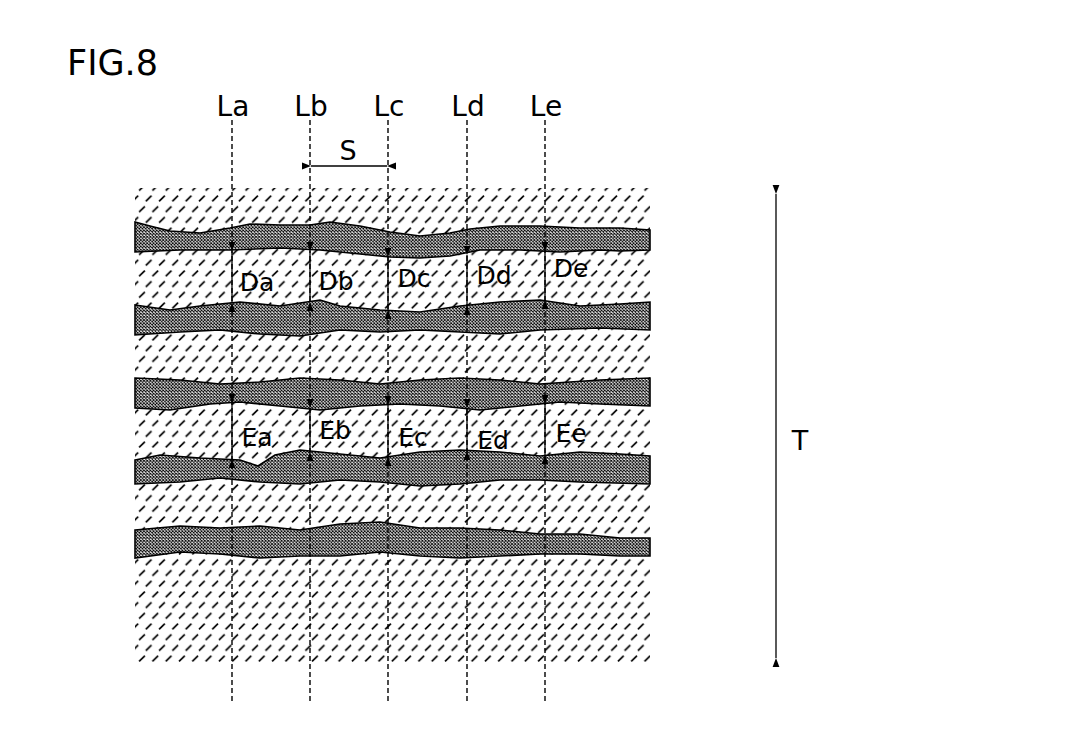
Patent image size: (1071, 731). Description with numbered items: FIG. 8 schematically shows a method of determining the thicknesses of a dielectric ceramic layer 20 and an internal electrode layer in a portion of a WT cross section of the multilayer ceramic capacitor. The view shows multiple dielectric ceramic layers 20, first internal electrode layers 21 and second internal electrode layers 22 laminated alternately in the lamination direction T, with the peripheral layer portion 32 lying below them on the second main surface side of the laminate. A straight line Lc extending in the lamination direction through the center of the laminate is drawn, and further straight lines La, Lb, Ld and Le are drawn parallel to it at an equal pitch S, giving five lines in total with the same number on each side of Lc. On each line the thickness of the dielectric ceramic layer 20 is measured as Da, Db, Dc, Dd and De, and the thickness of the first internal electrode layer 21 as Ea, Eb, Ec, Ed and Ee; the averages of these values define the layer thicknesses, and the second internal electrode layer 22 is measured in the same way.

The dielectric ceramic layer 20 is at (640, 276).
The first internal electrode layer 21 is at (145, 236).
The second internal electrode layer 22 is at (145, 318).
The peripheral layer portion 32 is at (635, 626).